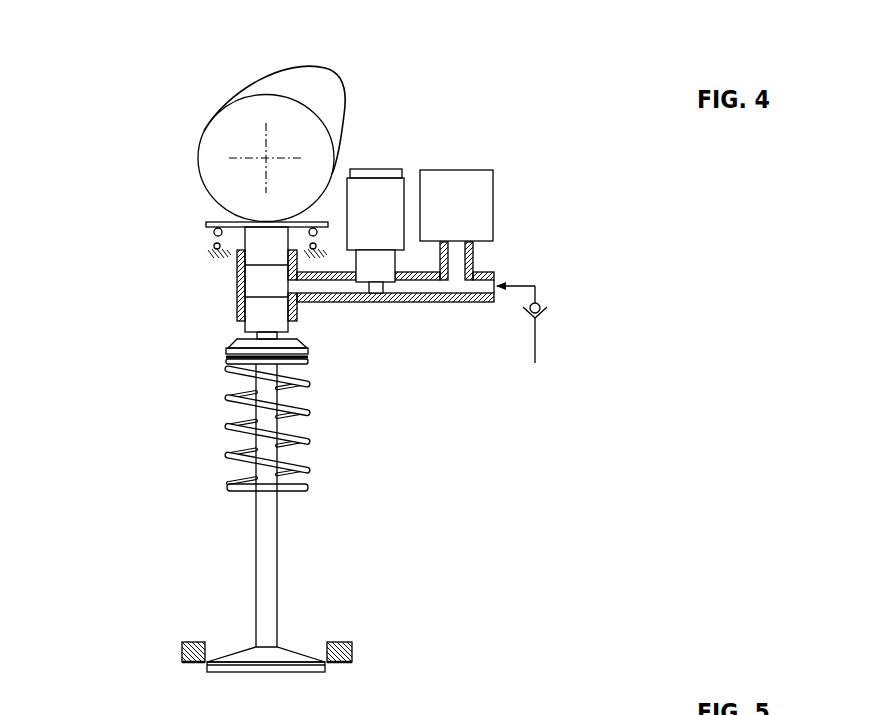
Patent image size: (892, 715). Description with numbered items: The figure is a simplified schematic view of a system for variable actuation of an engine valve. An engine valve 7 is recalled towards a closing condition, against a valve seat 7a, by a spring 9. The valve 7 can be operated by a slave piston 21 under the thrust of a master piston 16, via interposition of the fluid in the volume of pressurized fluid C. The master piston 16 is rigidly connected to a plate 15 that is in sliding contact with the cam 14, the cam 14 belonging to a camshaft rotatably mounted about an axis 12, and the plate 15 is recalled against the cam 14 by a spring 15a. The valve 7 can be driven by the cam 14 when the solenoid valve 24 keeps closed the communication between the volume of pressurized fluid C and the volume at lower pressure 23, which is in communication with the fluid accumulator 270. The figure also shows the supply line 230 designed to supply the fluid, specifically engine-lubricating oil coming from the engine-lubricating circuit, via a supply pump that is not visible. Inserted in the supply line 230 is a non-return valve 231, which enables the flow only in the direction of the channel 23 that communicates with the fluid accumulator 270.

The axis 12 is at (265, 156).
The cam 14 is at (275, 78).
The plate 15 is at (210, 222).
The spring 15a is at (212, 234).
The master piston 16 is at (267, 249).
The volume of pressurized fluid C is at (263, 288).
The slave piston 21 is at (275, 321).
The volume at lower pressure 23 is at (453, 288).
The solenoid valve 24 is at (377, 166).
The fluid accumulator 270 is at (488, 163).
The non-return valve 231 is at (537, 303).
The supply line 230 is at (538, 340).
The spring 9 is at (228, 430).
The engine valve 7 is at (284, 549).
The valve seat 7a is at (322, 664).